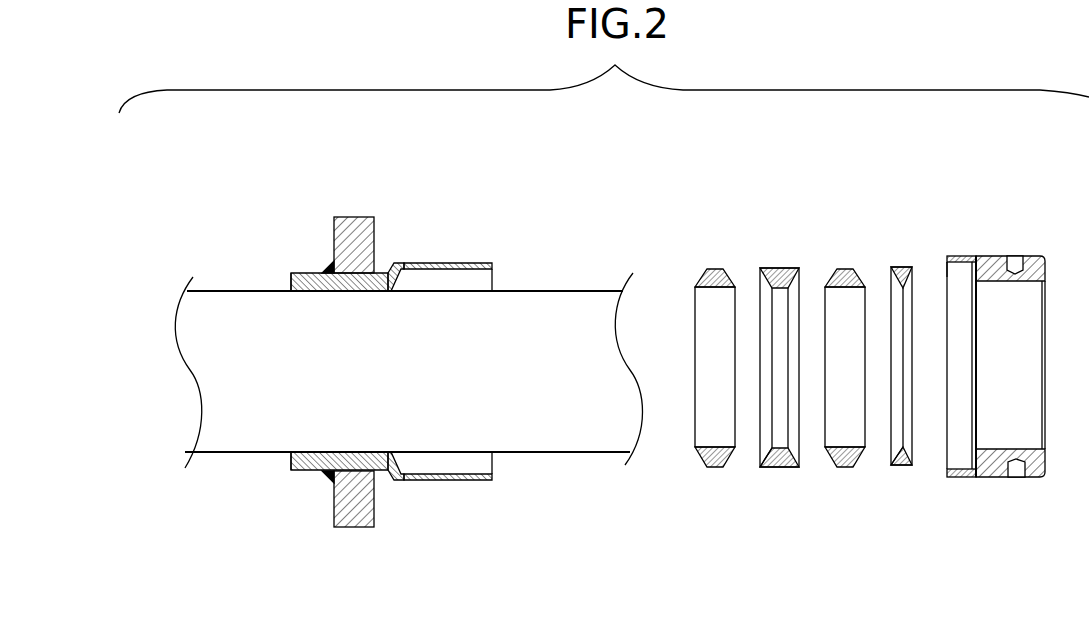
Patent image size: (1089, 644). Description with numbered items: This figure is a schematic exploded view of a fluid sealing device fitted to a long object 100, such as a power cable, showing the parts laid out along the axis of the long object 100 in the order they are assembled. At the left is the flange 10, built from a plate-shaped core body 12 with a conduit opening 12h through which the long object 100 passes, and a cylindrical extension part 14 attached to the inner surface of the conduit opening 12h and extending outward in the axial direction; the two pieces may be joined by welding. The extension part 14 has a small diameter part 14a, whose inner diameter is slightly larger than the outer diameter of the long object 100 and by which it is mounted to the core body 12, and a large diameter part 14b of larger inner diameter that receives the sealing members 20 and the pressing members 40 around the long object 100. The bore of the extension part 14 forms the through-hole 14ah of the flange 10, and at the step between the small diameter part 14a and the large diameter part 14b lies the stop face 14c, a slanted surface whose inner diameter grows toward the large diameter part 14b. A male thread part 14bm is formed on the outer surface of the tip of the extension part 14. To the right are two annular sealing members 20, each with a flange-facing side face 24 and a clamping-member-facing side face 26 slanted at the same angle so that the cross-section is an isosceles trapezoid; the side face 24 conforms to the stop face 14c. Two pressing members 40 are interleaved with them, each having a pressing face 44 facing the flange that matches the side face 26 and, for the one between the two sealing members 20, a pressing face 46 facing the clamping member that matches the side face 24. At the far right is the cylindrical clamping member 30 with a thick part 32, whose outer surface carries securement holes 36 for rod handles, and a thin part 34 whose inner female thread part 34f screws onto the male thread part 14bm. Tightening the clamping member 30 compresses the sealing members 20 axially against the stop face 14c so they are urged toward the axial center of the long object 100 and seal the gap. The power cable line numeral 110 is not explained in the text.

The flange 10 is at (375, 380).
The core body 12 is at (371, 229).
The conduit opening 12h is at (324, 272).
The extension part 14 is at (375, 401).
The small diameter part 14a is at (377, 472).
The large diameter part 14b is at (468, 425).
The stop face 14c is at (400, 462).
The through-hole 14ah is at (303, 291).
The male thread part 14bm is at (485, 480).
The sealing member 20 is at (767, 314).
The side face facing the flange 24 is at (698, 285).
The side face facing the clamping member 26 is at (730, 269).
The clamping member 30 is at (995, 360).
The thick part 32 is at (1045, 473).
The thin part 34 is at (952, 373).
The female thread part 34f is at (947, 275).
The securement hole 36 is at (1015, 478).
The pressing member 40 is at (819, 414).
The pressing face facing the flange 44 is at (762, 460).
The pressing face facing the clamping member 46 is at (797, 462).
The shaft 110 is at (408, 338).
The long object 100 is at (513, 305).